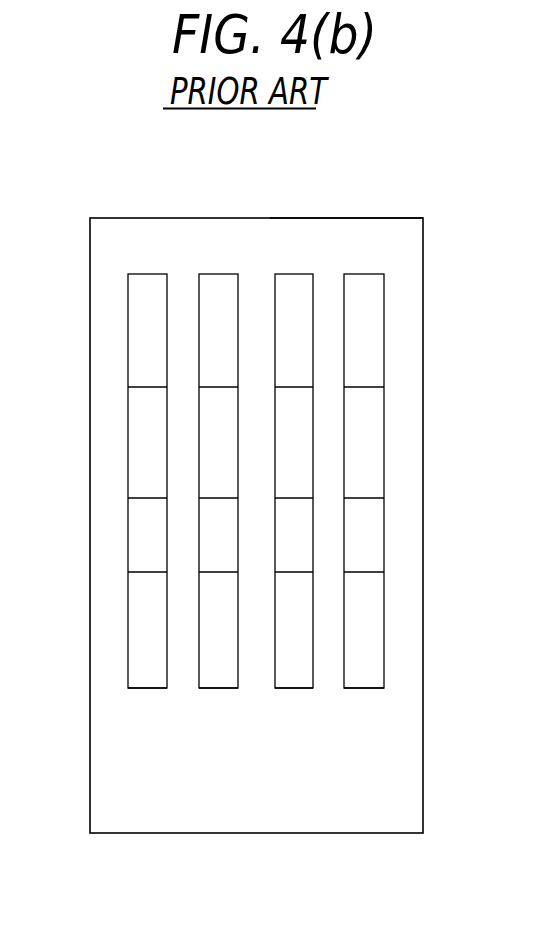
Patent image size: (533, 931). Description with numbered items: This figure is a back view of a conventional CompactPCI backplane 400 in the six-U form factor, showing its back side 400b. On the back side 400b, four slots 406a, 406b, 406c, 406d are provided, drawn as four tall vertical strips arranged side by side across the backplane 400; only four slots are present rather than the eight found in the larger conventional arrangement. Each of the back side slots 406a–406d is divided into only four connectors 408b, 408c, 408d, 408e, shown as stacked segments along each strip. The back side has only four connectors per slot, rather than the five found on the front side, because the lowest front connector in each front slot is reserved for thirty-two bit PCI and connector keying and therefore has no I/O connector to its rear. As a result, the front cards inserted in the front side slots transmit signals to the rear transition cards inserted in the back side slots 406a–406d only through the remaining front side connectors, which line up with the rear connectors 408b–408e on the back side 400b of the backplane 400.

The backplane 400 is at (160, 218).
The back side 400b is at (273, 218).
The slot 406a is at (365, 667).
The slot 406b is at (293, 667).
The slot 406c is at (218, 667).
The slot 406d is at (148, 667).
The connector 408b is at (217, 593).
The connector 408c is at (210, 553).
The connector 408d is at (217, 407).
The connector 408e is at (217, 295).